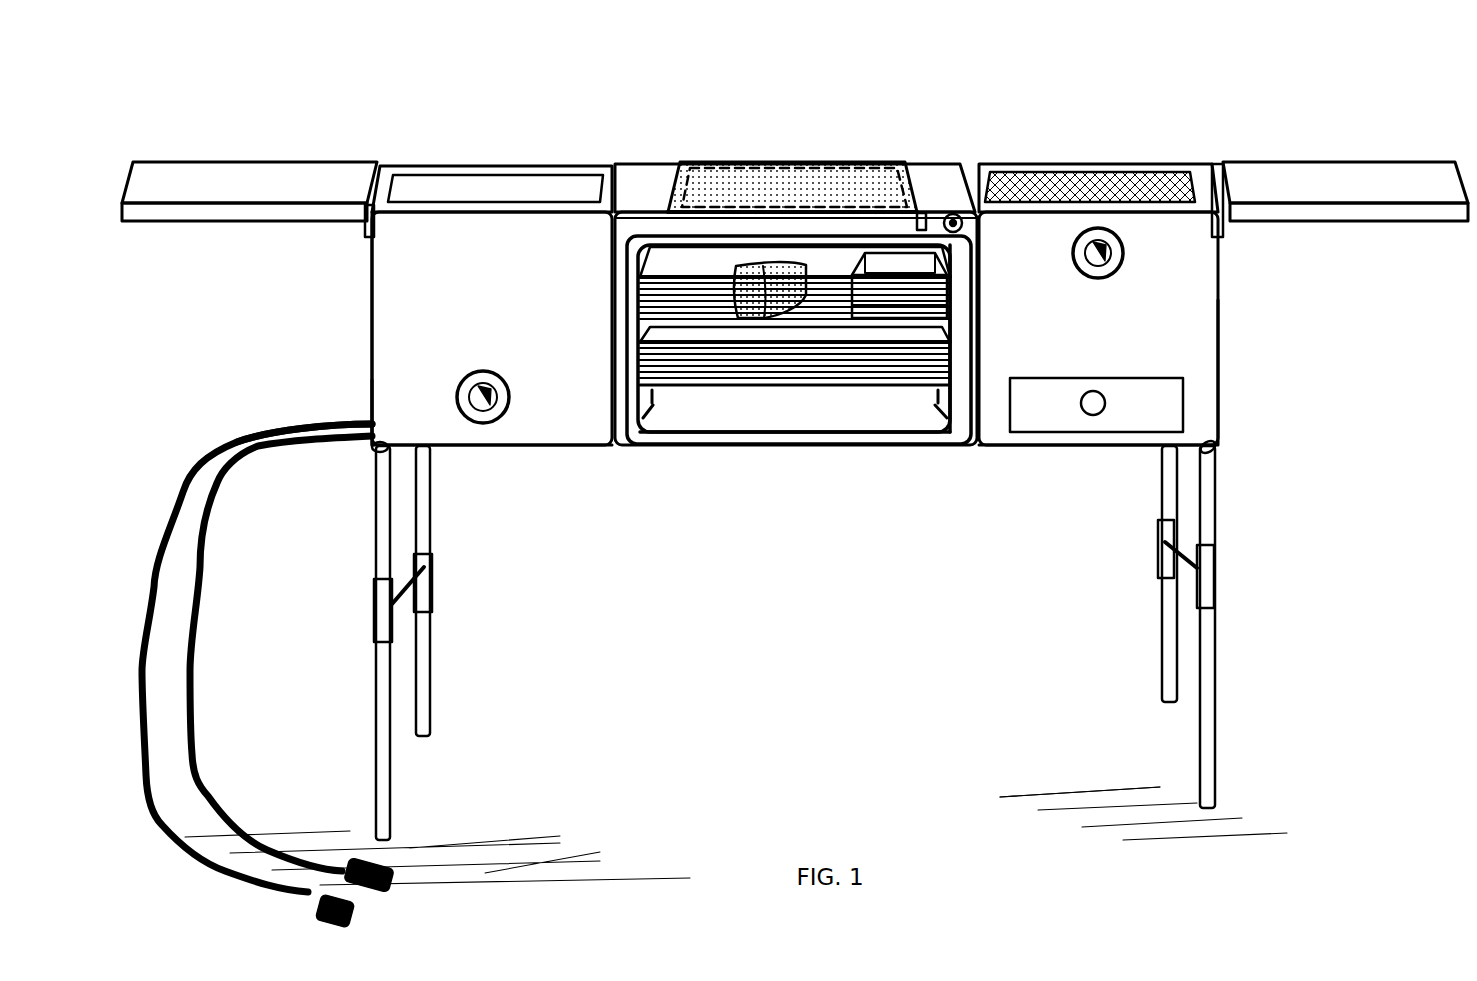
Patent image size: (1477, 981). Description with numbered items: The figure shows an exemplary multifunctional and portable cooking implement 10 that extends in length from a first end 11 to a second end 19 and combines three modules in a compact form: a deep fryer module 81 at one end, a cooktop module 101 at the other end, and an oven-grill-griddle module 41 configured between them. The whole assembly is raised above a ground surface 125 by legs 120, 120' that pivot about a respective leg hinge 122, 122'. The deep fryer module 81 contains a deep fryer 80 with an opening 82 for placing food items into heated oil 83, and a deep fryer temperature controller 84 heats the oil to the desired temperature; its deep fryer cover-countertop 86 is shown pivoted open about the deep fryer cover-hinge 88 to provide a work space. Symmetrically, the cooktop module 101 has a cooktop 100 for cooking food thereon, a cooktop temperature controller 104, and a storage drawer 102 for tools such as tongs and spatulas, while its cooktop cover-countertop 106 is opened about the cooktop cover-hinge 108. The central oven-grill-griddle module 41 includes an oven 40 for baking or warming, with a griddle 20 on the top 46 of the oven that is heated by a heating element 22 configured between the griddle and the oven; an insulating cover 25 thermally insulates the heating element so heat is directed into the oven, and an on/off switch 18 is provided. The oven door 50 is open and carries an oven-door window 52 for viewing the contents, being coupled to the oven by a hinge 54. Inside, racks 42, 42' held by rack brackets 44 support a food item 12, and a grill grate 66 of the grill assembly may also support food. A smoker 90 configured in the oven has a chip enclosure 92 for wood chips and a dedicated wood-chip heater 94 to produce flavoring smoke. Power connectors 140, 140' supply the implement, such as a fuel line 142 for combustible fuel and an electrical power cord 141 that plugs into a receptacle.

The multifunctional and portable cooking implement 10 is at (636, 88).
The first end 11 is at (372, 380).
The food item 12 is at (735, 273).
The on/off switch 18 is at (920, 200).
The second end 19 is at (1220, 386).
The griddle 20 is at (788, 172).
The heating element 22 is at (752, 178).
The insulating cover 25 is at (903, 161).
The oven 40 is at (655, 250).
The oven-grill-griddle module 41 is at (855, 410).
The rack 42 is at (736, 281).
The rack 42' is at (726, 339).
The rack bracket 44 is at (650, 387).
The top of the oven 46 is at (947, 170).
The oven door 50 is at (945, 425).
The oven-door window 52 is at (625, 236).
The hinge 54 is at (680, 445).
The grill grate 66 is at (905, 354).
The deep fryer 80 is at (400, 320).
The deep fryer module 81 is at (400, 278).
The opening 82 is at (445, 190).
The heated oil 83 is at (500, 190).
The deep fryer temperature controller 84 is at (500, 401).
The deep fryer cover-countertop 86 is at (235, 180).
The deep fryer cover-hinge 88 is at (383, 165).
The smoker 90 is at (937, 300).
The chip enclosure 92 is at (937, 290).
The wood-chip heater 94 is at (937, 313).
The cooktop 100 is at (1100, 180).
The cooktop module 101 is at (1185, 318).
The storage drawer 102 is at (1127, 412).
The cooktop temperature controller 104 is at (1112, 253).
The cooktop cover-countertop 106 is at (1420, 178).
The cooktop cover-hinge 108 is at (1222, 165).
The leg 120 is at (464, 643).
The leg 120' is at (1122, 627).
The leg hinge 122 is at (328, 465).
The leg hinge 122' is at (1256, 479).
The ground surface 125 is at (1085, 800).
The power connector 140 is at (257, 658).
The power connector 140' is at (243, 413).
The electrical power cord 141 is at (192, 651).
The fuel line 142 is at (172, 515).